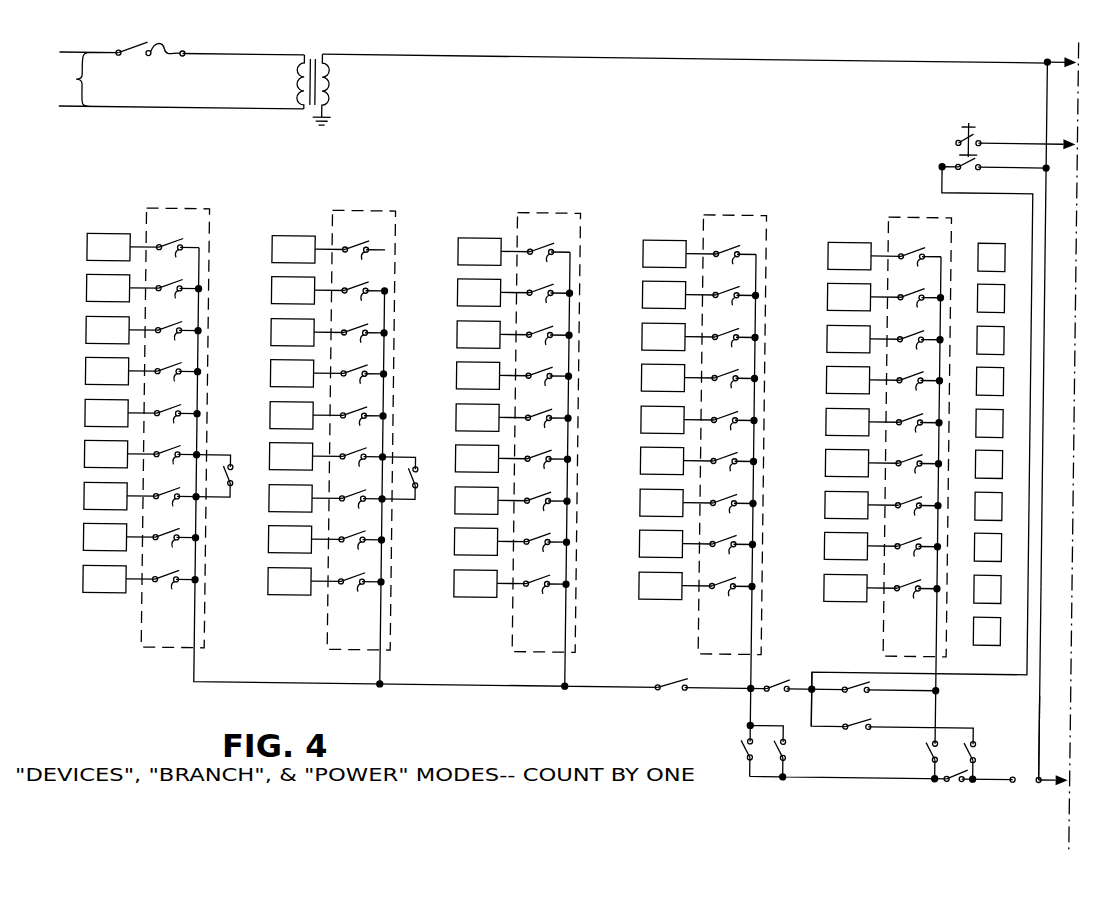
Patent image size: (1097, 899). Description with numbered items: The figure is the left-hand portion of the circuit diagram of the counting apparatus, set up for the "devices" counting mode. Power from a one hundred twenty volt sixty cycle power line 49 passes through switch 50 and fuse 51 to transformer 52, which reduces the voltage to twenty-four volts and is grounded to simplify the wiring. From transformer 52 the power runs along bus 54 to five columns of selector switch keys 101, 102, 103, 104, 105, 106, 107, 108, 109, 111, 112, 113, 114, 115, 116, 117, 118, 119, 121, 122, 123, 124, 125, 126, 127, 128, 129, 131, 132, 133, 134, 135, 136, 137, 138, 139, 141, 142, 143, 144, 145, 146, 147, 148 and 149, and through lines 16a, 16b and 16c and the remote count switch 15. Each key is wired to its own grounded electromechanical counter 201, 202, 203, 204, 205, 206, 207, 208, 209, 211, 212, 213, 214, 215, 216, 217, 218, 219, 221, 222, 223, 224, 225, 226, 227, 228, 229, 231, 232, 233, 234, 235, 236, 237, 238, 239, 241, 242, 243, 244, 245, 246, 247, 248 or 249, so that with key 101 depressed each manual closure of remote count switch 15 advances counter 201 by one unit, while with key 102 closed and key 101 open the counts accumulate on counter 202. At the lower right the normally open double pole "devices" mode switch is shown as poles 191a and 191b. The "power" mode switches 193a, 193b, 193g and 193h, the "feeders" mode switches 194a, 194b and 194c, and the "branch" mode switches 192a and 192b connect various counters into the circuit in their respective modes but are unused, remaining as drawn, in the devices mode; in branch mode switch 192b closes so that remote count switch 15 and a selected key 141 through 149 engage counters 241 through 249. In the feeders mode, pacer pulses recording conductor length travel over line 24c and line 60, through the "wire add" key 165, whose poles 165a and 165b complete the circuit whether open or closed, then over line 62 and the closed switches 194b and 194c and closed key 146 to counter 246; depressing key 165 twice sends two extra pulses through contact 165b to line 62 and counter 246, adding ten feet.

The power line 49 is at (182, 80).
The switch 50 is at (138, 42).
The fuse 51 is at (170, 48).
The transformer 52 is at (314, 48).
The bus 54 is at (598, 55).
The line 24c is at (1062, 52).
The wire add switch key 165 is at (962, 117).
The wire add switch contact 165a is at (977, 136).
The wire add switch 165b is at (978, 160).
The line 60 is at (1062, 134).
The line 62 is at (1028, 212).
The feeders mode switch 194a is at (660, 688).
The feeders mode switch 194b is at (773, 682).
The feeders mode switch 194c is at (854, 689).
The power mode switch 193a is at (786, 760).
The power mode switch 193b is at (853, 726).
The power mode switch 193g is at (232, 470).
The power mode switch 193h is at (417, 470).
The devices mode switch 191a is at (745, 746).
The devices mode switch 191b is at (934, 747).
The branch mode switch 192a is at (950, 780).
The branch mode switch 192b is at (972, 748).
The line 16a is at (998, 778).
The line 16b is at (1042, 690).
The line 16c is at (1058, 778).
The remote count switch 15 is at (1026, 782).
The electromechanical counter 201 is at (108, 247).
The electromechanical counter 202 is at (107, 288).
The electromechanical counter 203 is at (107, 330).
The electromechanical counter 204 is at (106, 371).
The electromechanical counter 205 is at (106, 413).
The electromechanical counter 206 is at (105, 454).
The electromechanical counter 207 is at (105, 496).
The electromechanical counter 208 is at (104, 537).
The electromechanical counter 209 is at (104, 579).
The electromechanical counter 211 is at (293, 250).
The electromechanical counter 212 is at (292, 291).
The electromechanical counter 213 is at (292, 333).
The electromechanical counter 214 is at (291, 374).
The electromechanical counter 215 is at (291, 416).
The electromechanical counter 216 is at (290, 457).
The electromechanical counter 217 is at (290, 499).
The electromechanical counter 218 is at (289, 540).
The electromechanical counter 219 is at (289, 582).
The electromechanical counter 221 is at (479, 252).
The electromechanical counter 222 is at (478, 293).
The electromechanical counter 223 is at (478, 335).
The electromechanical counter 224 is at (477, 376).
The electromechanical counter 225 is at (477, 418).
The electromechanical counter 226 is at (476, 459).
The electromechanical counter 227 is at (476, 501).
The electromechanical counter 228 is at (475, 542).
The electromechanical counter 229 is at (475, 584).
The electromechanical counter 231 is at (664, 254).
The electromechanical counter 232 is at (663, 295).
The electromechanical counter 233 is at (663, 337).
The electromechanical counter 234 is at (662, 378).
The electromechanical counter 235 is at (662, 420).
The electromechanical counter 236 is at (661, 461).
The electromechanical counter 237 is at (661, 503).
The electromechanical counter 238 is at (660, 544).
The electromechanical counter 239 is at (660, 586).
The electromechanical counter 241 is at (849, 256).
The electromechanical counter 242 is at (848, 297).
The electromechanical counter 243 is at (848, 339).
The electromechanical counter 244 is at (847, 380).
The electromechanical counter 245 is at (847, 422).
The electromechanical counter 246 is at (846, 463).
The electromechanical counter 247 is at (846, 505).
The electromechanical counter 248 is at (845, 546).
The electromechanical counter 249 is at (845, 588).
The switch key 101 is at (164, 257).
The switch key 102 is at (165, 298).
The switch key 103 is at (165, 340).
The switch key 104 is at (164, 381).
The switch key 105 is at (164, 423).
The switch key 106 is at (161, 464).
The switch key 107 is at (161, 506).
The switch key 108 is at (162, 547).
The switch key 109 is at (162, 589).
The switch key 111 is at (350, 259).
The switch key 112 is at (350, 300).
The switch key 113 is at (350, 342).
The switch key 114 is at (349, 383).
The switch key 115 is at (349, 425).
The switch key 116 is at (347, 466).
The switch key 117 is at (347, 508).
The switch key 118 is at (347, 549).
The switch key 119 is at (347, 591).
The switch key 121 is at (535, 261).
The switch key 122 is at (536, 302).
The switch key 123 is at (536, 344).
The switch key 124 is at (535, 385).
The switch key 125 is at (535, 427).
The switch key 126 is at (534, 468).
The switch key 127 is at (534, 510).
The switch key 128 is at (533, 551).
The switch key 129 is at (533, 593).
The switch key 131 is at (721, 264).
The switch key 132 is at (721, 305).
The switch key 133 is at (721, 347).
The switch key 134 is at (720, 388).
The switch key 135 is at (720, 430).
The switch key 136 is at (719, 471).
The switch key 137 is at (719, 513).
The switch key 138 is at (718, 554).
The switch key 139 is at (718, 596).
The switch key 141 is at (906, 266).
The switch key 142 is at (906, 307).
The switch key 143 is at (906, 349).
The switch key 144 is at (905, 390).
The switch key 145 is at (905, 432).
The switch key 146 is at (904, 473).
The switch key 147 is at (904, 515).
The switch key 148 is at (903, 556).
The switch key 149 is at (903, 598).